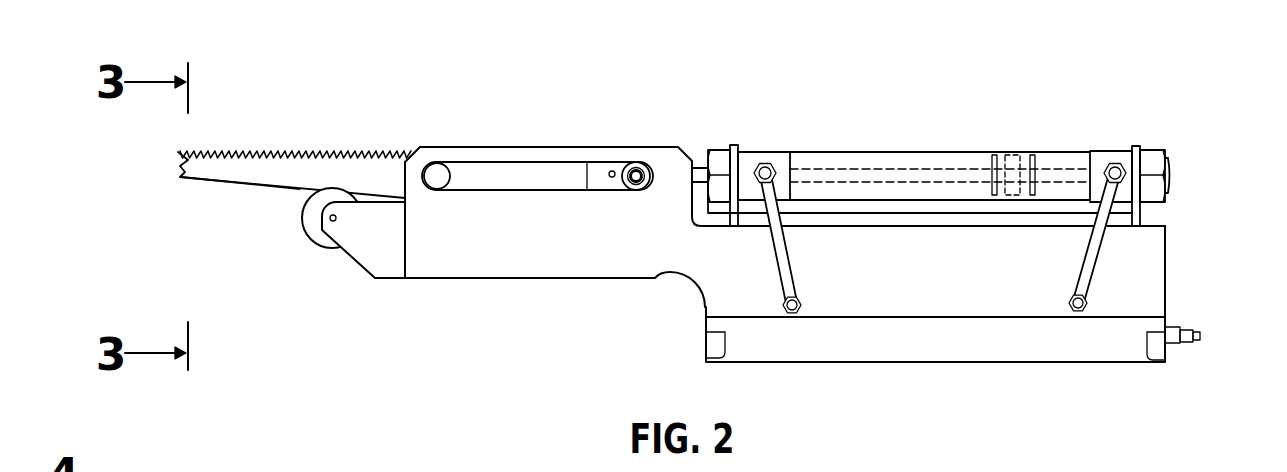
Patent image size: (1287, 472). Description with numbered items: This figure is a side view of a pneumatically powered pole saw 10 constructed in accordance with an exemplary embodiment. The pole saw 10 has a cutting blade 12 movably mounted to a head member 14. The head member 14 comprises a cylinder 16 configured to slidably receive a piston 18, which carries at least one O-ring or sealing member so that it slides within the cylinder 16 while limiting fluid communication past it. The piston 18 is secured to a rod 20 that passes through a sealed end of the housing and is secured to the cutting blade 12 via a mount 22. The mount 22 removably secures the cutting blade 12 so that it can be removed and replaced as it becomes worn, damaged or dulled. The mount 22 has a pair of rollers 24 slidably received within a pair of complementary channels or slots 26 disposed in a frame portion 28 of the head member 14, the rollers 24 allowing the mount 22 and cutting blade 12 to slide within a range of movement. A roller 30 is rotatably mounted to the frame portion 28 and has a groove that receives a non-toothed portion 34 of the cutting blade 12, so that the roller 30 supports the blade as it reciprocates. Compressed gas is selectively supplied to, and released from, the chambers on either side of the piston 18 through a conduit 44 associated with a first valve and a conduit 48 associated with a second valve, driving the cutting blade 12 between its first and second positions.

The pneumatically powered pole saw 10 is at (855, 73).
The cutting blade 12 is at (307, 173).
The head member 14 is at (828, 361).
The cylinder 16 is at (900, 157).
The piston 18 is at (1013, 163).
The rod 20 is at (696, 168).
The mount 22 is at (602, 168).
The rollers 24 is at (632, 167).
The slots 26 is at (492, 166).
The frame portion 28 is at (500, 258).
The roller 30 is at (317, 233).
The non-toothed portion 34 is at (243, 185).
The conduit 44 is at (783, 260).
The conduit 48 is at (1097, 240).